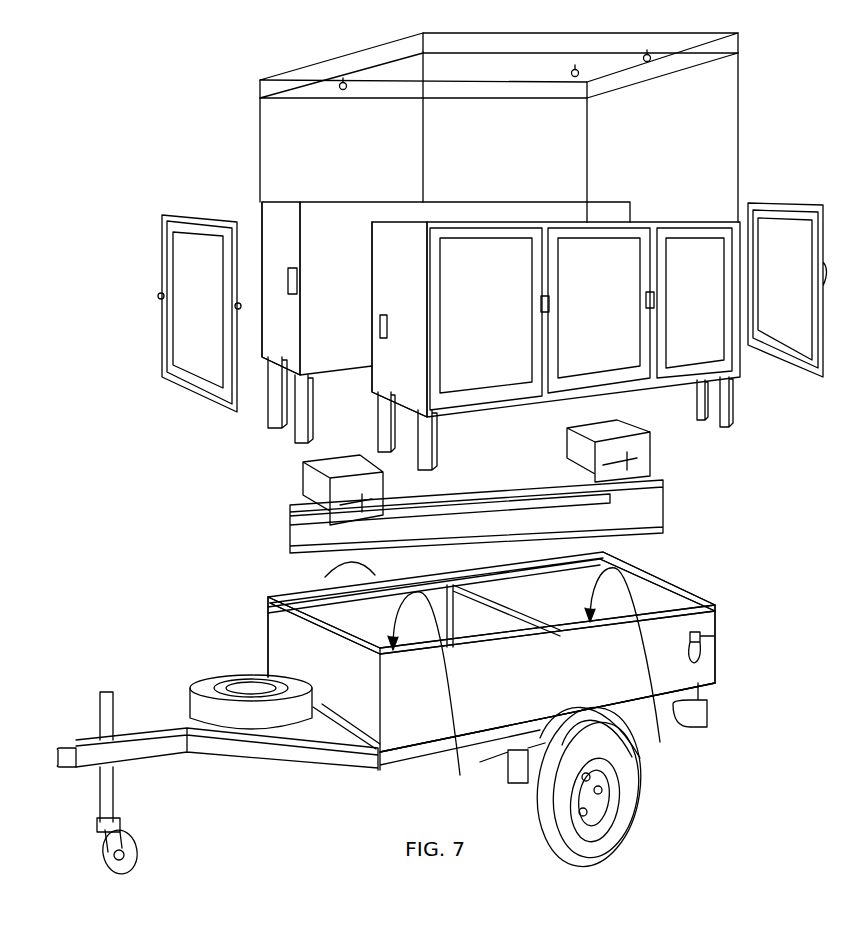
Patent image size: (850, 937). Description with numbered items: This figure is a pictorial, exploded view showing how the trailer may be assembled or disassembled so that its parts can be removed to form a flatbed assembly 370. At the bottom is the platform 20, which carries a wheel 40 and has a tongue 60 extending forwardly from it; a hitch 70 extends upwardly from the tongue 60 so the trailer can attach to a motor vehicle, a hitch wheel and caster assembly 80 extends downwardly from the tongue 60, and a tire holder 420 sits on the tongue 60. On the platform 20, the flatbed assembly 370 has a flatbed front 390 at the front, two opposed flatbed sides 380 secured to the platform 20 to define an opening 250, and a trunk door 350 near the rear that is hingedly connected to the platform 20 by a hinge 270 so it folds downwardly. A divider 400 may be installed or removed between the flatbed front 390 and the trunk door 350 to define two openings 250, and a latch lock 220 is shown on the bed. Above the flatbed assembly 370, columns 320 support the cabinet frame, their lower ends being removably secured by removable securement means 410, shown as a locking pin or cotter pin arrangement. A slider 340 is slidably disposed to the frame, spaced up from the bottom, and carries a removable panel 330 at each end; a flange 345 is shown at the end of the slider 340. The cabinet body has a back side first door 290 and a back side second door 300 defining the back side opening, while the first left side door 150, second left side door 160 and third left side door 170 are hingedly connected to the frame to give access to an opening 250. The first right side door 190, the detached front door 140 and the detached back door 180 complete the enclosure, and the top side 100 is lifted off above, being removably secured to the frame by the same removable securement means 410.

The top side 100 is at (272, 62).
The removable securement means 410 is at (347, 92).
The first right side door 190 is at (532, 294).
The opening 250 is at (446, 288).
The back side second door 300 is at (270, 257).
The back side first door 290 is at (391, 280).
The first left side door 150 is at (477, 315).
The second left side door 160 is at (584, 315).
The third left side door 170 is at (679, 304).
The front door 140 is at (179, 319).
The back door 180 is at (772, 290).
The column 320 is at (272, 436).
The removable panel 330 is at (340, 470).
The slider 340 is at (476, 516).
The beam flange 345 is at (340, 553).
The flatbed assembly 370 is at (533, 661).
The flatbed side 380 is at (352, 623).
The flatbed front 390 is at (311, 665).
The divider 400 is at (467, 627).
The trunk door 350 is at (644, 602).
The latch lock 220 is at (733, 668).
The hinge 270 is at (534, 680).
The platform 20 is at (387, 772).
The wheel 40 is at (618, 803).
The tongue 60 is at (282, 750).
The hitch 70 is at (115, 722).
The hitch wheel and caster assembly 80 is at (132, 862).
The tire holder 420 is at (255, 678).